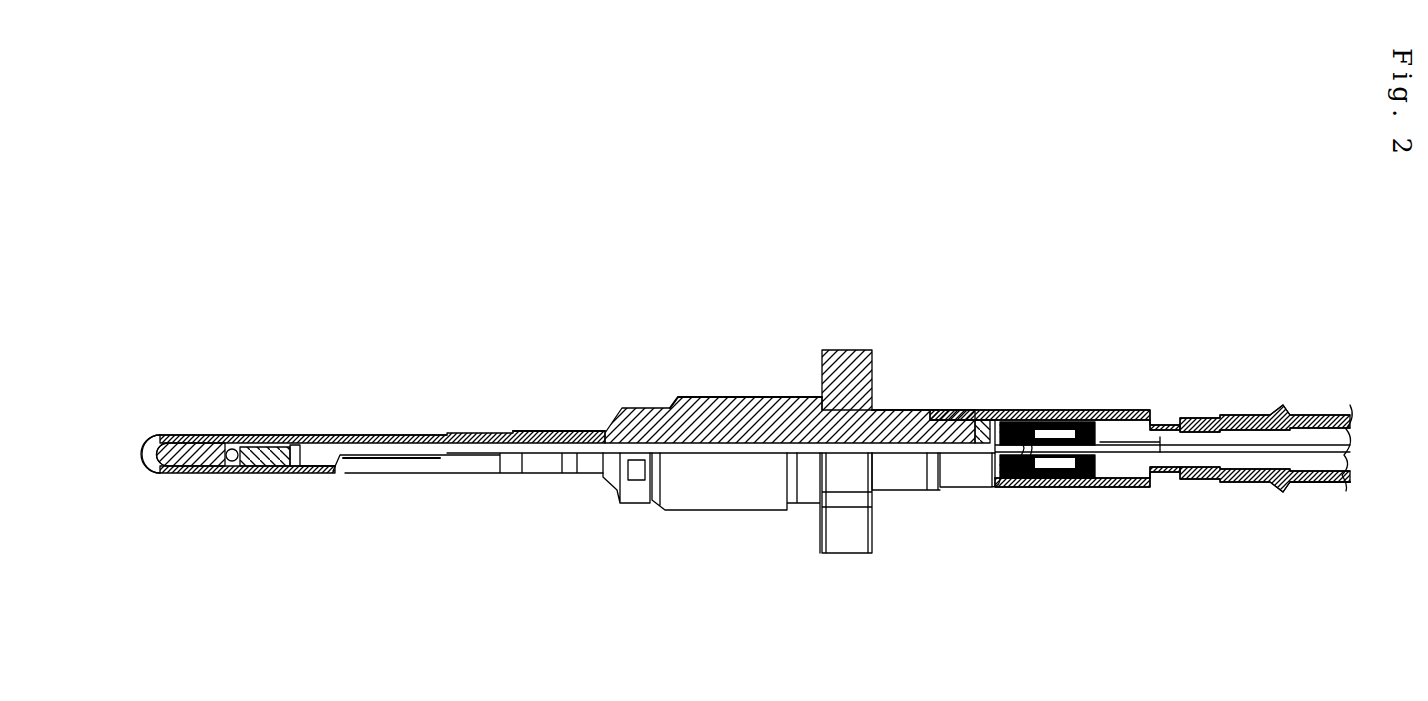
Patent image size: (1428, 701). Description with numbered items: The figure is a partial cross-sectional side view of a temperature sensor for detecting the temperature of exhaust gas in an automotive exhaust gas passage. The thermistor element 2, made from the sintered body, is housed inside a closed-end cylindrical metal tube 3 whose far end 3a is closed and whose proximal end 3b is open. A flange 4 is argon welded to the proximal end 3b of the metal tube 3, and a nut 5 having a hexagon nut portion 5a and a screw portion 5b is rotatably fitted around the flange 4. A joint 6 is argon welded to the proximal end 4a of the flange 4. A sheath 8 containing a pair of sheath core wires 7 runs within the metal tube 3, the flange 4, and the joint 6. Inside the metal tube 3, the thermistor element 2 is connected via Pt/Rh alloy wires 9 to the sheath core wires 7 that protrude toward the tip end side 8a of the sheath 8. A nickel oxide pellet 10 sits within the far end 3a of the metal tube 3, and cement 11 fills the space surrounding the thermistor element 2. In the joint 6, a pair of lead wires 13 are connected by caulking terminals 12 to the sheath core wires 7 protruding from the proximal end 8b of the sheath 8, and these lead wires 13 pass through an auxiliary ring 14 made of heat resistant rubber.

The thermistor element 2 is at (227, 437).
The metal tube 3 is at (337, 473).
The far end 3a is at (131, 447).
The proximal end 3b is at (545, 435).
The flange 4 is at (636, 500).
The proximal end 4a is at (903, 409).
The nut 5 is at (736, 487).
The hexagon nut portion 5a is at (830, 350).
The screw portion 5b is at (710, 397).
The joint 6 is at (960, 476).
The sheath core wires 7 is at (292, 447).
The sheath 8 is at (320, 450).
The tip end side 8a is at (314, 473).
The proximal end 8b is at (985, 410).
The Pt/Rh alloy wires 9 is at (262, 437).
The nickel oxide pellet 10 is at (178, 473).
The cement 11 is at (215, 473).
The terminals 12 is at (1066, 480).
The lead wires 13 is at (1150, 460).
The auxiliary ring 14 is at (1305, 482).